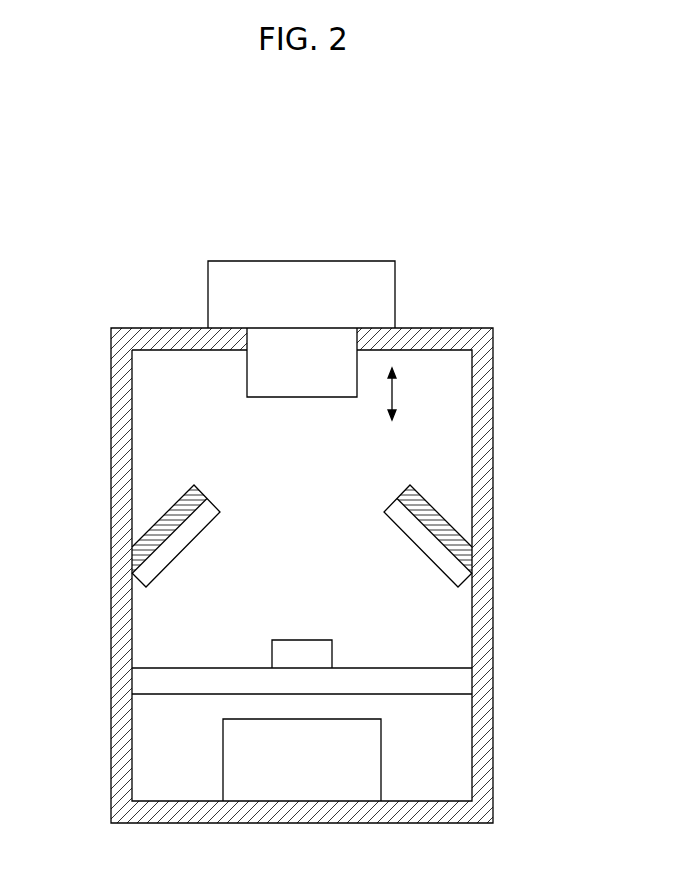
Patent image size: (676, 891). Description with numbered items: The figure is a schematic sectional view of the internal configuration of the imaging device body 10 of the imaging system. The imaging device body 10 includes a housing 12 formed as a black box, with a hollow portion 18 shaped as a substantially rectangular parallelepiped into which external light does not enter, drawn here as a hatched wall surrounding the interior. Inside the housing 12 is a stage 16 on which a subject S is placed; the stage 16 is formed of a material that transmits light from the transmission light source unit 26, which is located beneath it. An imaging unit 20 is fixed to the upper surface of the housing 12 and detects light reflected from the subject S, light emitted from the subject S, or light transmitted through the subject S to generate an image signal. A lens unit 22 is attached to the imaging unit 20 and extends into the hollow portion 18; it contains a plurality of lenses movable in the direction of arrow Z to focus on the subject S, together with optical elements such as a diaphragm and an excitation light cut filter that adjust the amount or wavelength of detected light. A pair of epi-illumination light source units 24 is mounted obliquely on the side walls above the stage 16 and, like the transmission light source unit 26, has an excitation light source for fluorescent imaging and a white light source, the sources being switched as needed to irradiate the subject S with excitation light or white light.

The imaging device body 10 is at (478, 219).
The housing 12 is at (480, 448).
The stage 16 is at (465, 680).
The hollow portion 18 is at (467, 412).
The imaging unit 20 is at (364, 268).
The lens unit 22 is at (321, 390).
The epi-illumination light source unit 24 is at (170, 543).
The transmission light source unit 26 is at (318, 790).
The subject S is at (321, 648).
The arrow Z is at (396, 393).